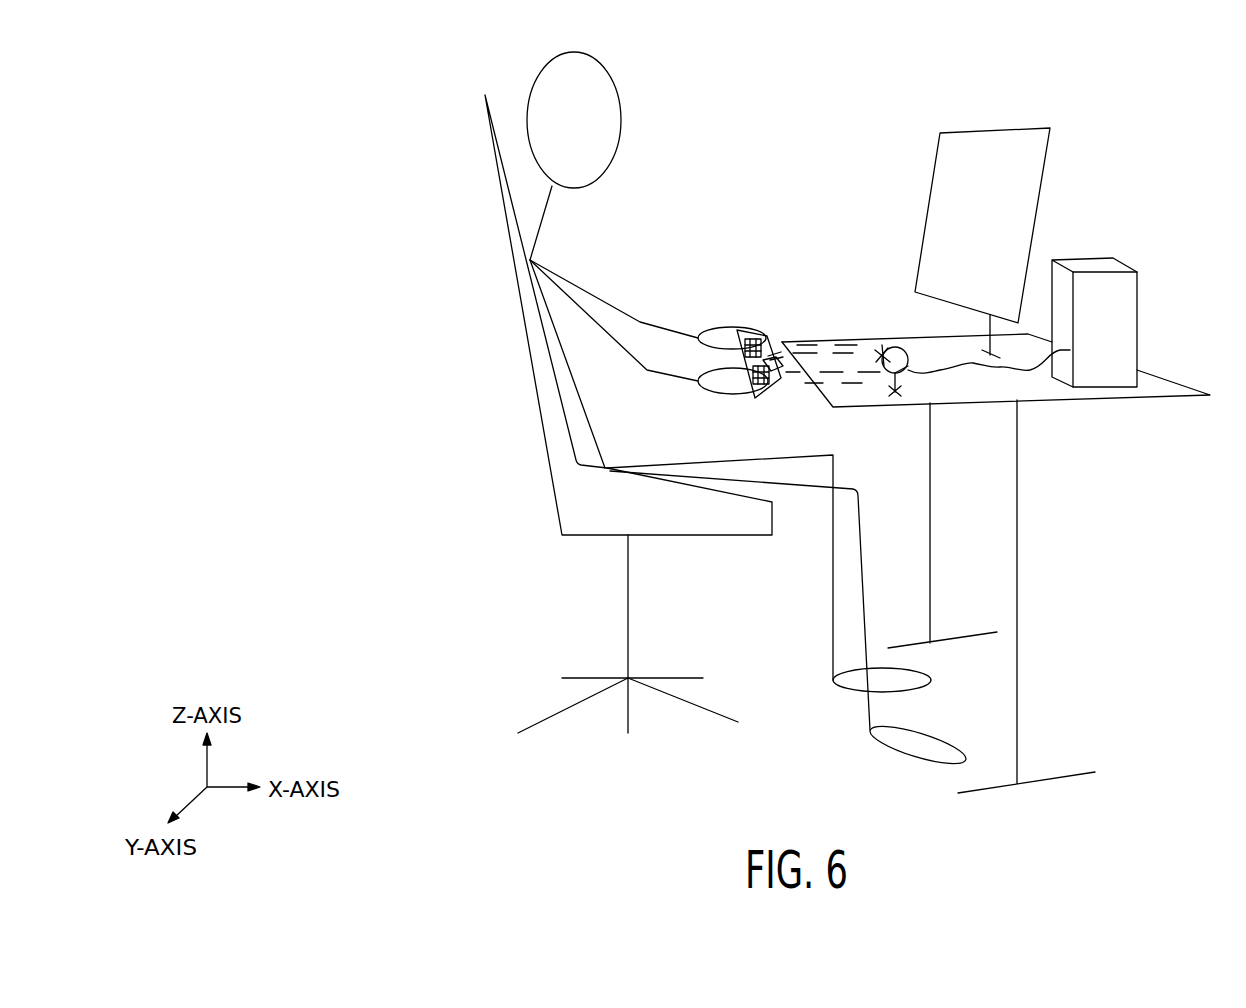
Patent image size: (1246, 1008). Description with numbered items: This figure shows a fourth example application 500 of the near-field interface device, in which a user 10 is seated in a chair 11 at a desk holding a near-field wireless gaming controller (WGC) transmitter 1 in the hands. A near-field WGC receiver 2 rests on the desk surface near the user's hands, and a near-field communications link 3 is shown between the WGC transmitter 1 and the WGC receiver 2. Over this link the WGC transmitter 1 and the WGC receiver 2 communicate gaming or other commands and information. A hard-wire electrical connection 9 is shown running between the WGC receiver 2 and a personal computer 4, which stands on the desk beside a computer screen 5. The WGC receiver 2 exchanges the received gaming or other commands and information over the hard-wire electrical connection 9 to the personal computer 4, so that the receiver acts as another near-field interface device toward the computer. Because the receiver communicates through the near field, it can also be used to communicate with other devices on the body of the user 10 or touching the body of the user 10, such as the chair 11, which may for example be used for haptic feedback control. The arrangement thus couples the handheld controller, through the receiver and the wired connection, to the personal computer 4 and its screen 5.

The system environment 500 is at (233, 121).
The user 10 is at (560, 130).
The chair 11 is at (594, 514).
The near-field wireless gaming controller transmitter 1 is at (757, 330).
The near-field communications link 3 is at (786, 380).
The near-field wireless gaming controller receiver 2 is at (897, 348).
The hard-wire electrical connection 9 is at (1030, 373).
The computer screen 5 is at (968, 222).
The personal computer 4 is at (1097, 336).